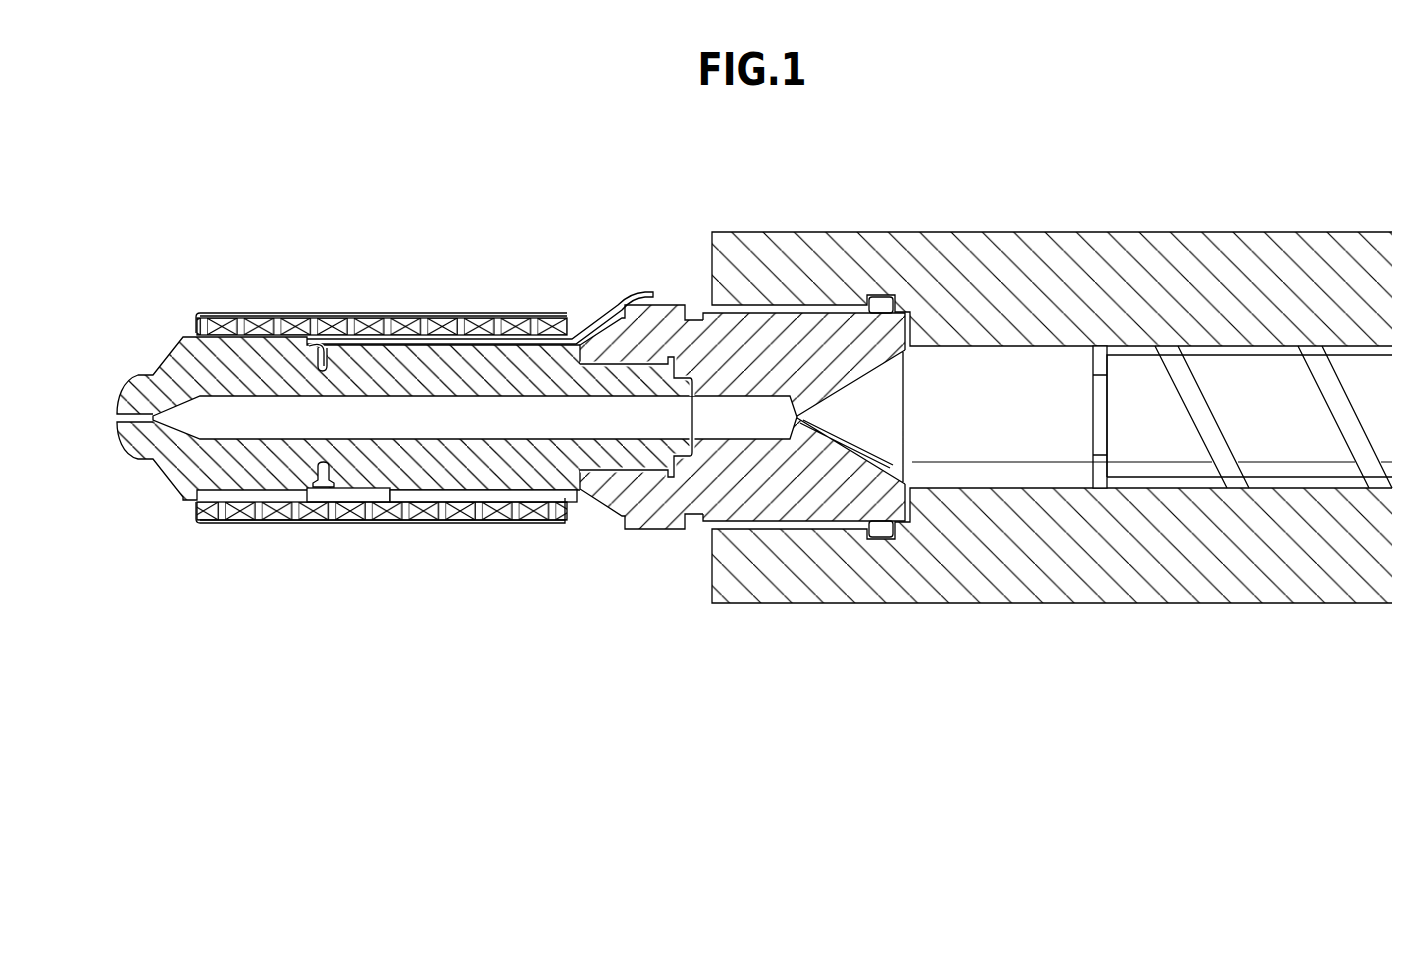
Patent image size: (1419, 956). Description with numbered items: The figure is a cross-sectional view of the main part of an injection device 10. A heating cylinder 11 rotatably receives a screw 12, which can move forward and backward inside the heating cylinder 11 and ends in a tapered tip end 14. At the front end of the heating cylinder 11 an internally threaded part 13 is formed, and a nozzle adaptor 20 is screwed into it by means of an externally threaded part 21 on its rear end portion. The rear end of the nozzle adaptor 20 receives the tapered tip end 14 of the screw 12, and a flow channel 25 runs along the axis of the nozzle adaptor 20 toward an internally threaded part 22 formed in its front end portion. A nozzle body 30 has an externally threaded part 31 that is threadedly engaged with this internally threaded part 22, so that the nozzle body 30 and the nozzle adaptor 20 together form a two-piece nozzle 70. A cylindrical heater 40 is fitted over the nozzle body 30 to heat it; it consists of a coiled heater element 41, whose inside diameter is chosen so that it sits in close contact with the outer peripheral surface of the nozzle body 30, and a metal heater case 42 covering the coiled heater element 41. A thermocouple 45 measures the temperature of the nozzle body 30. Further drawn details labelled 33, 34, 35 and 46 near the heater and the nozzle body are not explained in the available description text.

The injection device 10 is at (1084, 190).
The heating cylinder 11 is at (972, 240).
The screw 12 is at (1167, 447).
The internally threaded part 13 is at (825, 303).
The tapered tip end 14 is at (865, 393).
The nozzle adaptor 20 is at (676, 303).
The externally threaded part 21 is at (778, 297).
The internally threaded part 22 is at (645, 455).
The flow channel 25 is at (722, 438).
The nozzle body 30 is at (173, 348).
The externally threaded part 31 is at (610, 462).
The terminal pin 33 is at (322, 490).
The plate 34 is at (358, 520).
The plate 35 is at (477, 493).
The cylindrical heater 40 is at (375, 476).
The coiled heater element 41 is at (240, 517).
The heater case 42 is at (277, 523).
The thermocouple 45 is at (597, 316).
The terminal 46 is at (308, 342).
The two-piece nozzle 70 is at (653, 166).